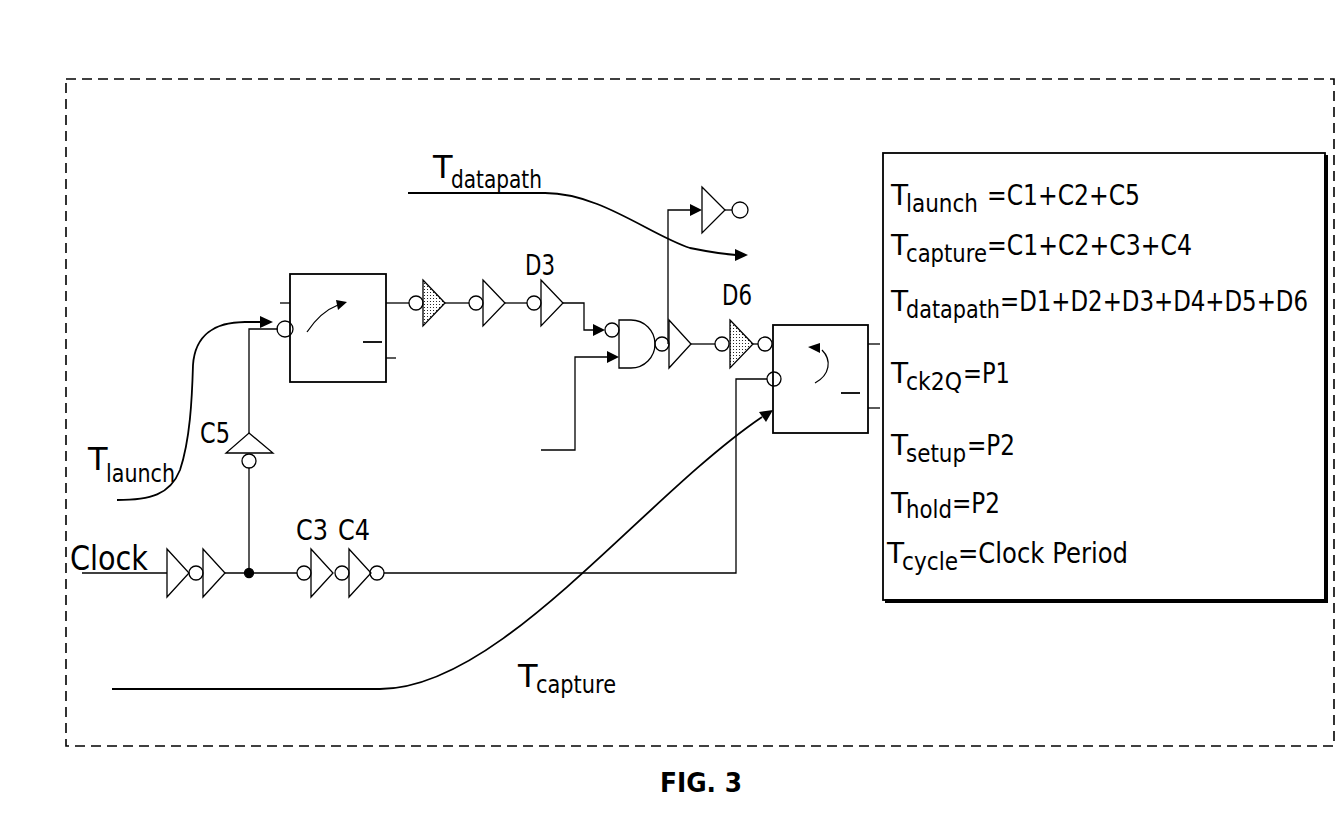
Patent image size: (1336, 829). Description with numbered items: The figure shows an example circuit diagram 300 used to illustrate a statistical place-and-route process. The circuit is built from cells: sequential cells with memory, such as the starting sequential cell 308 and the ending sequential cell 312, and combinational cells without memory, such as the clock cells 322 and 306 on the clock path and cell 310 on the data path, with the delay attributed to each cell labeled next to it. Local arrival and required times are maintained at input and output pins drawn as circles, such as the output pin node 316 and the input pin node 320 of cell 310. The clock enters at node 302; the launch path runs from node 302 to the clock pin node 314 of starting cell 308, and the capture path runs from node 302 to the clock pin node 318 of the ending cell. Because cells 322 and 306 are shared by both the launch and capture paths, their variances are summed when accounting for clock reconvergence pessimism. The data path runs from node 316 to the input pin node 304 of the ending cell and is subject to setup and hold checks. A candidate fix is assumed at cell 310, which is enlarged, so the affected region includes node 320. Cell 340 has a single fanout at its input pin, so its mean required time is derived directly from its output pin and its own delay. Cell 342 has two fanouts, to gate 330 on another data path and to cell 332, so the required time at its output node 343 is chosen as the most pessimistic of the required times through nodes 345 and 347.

The example circuit diagram 300 is at (168, 40).
The input clock node 302 is at (135, 577).
The input pin of the ending cell 304 is at (772, 325).
The combinational cell 306 is at (219, 586).
The sequential cell 308 is at (336, 382).
The combinational cell 310 is at (495, 326).
The sequential cell 312 is at (823, 433).
The clock pin node of starting cell 314 is at (281, 322).
The output pin node 316 is at (410, 297).
The clock pin node of ending cell 318 is at (742, 388).
The input pin node of cell 310 320 is at (470, 296).
The combinational cell 322 is at (165, 560).
The gate 330 is at (715, 191).
The cell 332 is at (672, 367).
The cell 340 is at (439, 326).
The cell 342 is at (636, 369).
The node 343 is at (662, 336).
The node 345 is at (748, 210).
The node 347 is at (713, 351).